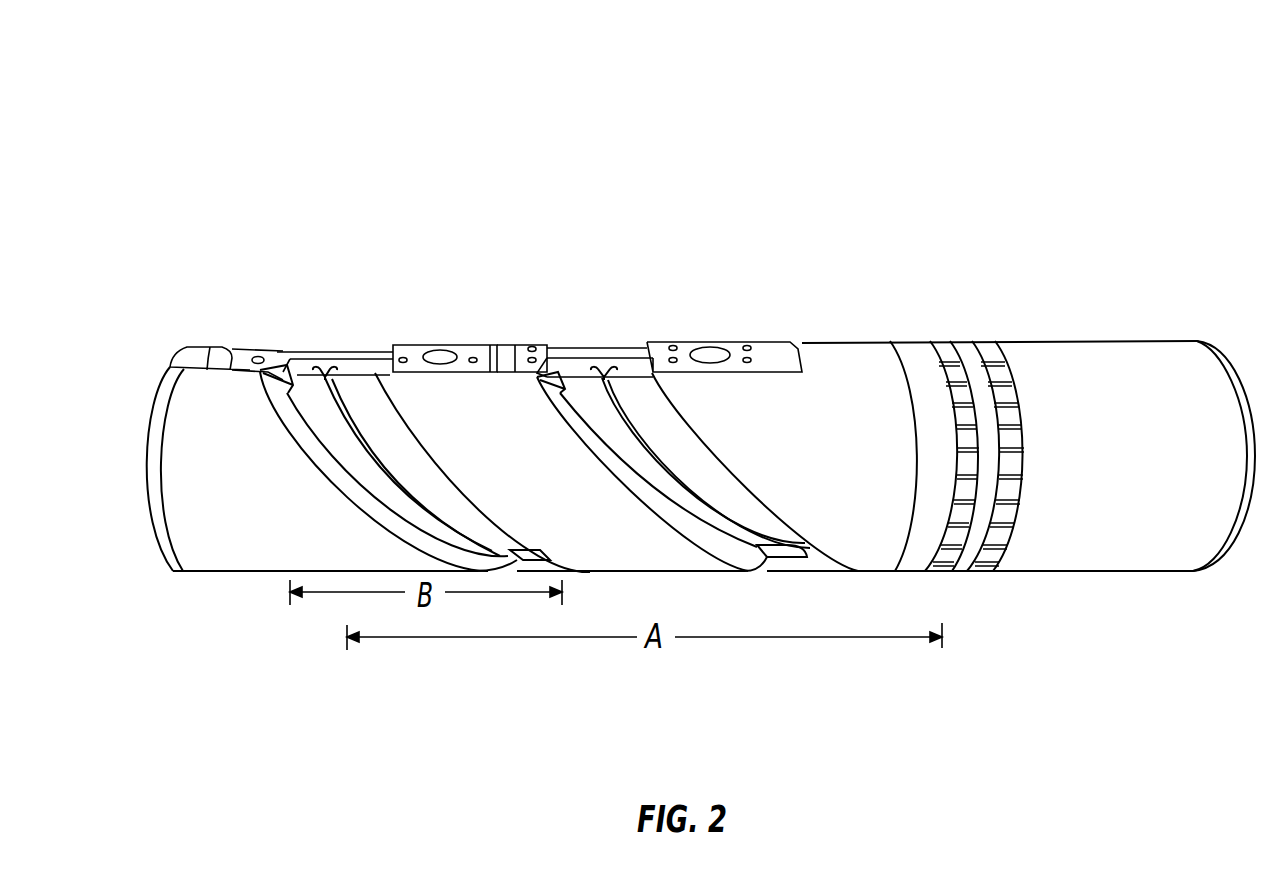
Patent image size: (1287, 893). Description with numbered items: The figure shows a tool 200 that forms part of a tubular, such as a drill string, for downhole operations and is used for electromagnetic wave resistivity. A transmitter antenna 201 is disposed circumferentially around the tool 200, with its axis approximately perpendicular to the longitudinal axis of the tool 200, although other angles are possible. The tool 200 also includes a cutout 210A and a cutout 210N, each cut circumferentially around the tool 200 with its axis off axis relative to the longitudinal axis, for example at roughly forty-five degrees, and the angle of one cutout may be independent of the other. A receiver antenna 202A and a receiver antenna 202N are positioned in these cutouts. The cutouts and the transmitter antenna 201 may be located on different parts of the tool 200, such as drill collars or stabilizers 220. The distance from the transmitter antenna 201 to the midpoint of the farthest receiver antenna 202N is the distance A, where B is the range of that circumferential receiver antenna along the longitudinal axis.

The tool 200 is at (233, 70).
The transmitter antenna 201 is at (978, 572).
The stabilizers 220 is at (174, 581).
The cutout 210N is at (295, 398).
The cutout 210A is at (565, 392).
The receiver antenna 202N is at (390, 470).
The receiver antenna 202A is at (683, 465).